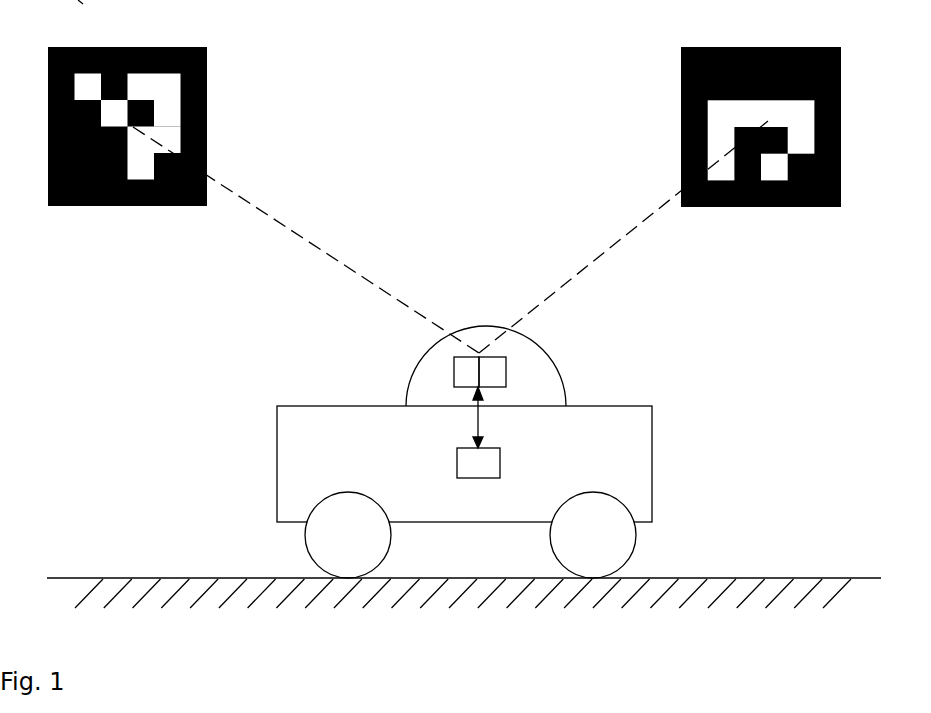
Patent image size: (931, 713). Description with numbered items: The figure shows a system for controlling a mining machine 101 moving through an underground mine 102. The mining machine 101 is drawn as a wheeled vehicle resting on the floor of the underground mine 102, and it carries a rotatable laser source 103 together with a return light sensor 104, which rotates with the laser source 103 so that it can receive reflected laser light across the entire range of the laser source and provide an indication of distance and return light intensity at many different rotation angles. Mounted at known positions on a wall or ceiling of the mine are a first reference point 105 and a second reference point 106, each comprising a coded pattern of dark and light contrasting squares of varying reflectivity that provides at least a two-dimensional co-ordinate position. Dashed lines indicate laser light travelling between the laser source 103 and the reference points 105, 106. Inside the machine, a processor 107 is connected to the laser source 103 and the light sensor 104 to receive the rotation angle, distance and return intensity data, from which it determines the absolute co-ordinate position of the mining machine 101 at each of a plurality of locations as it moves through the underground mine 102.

The mining machine 101 is at (652, 448).
The underground mine 102 is at (103, 578).
The rotatable laser source 103 is at (465, 372).
The return light sensor 104 is at (525, 377).
The first reference point 105 is at (207, 120).
The second reference point 106 is at (681, 134).
The processor 107 is at (467, 464).